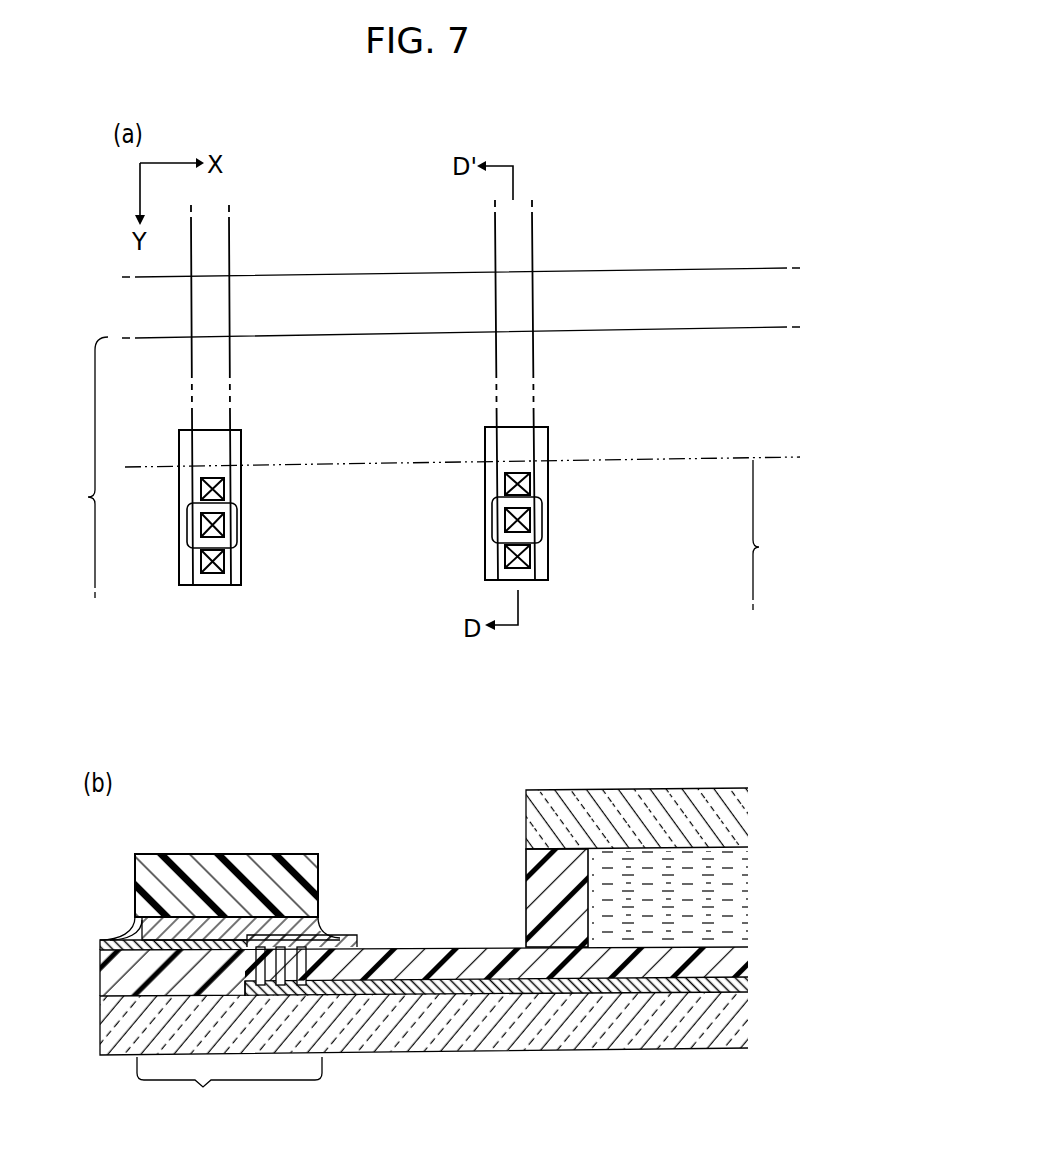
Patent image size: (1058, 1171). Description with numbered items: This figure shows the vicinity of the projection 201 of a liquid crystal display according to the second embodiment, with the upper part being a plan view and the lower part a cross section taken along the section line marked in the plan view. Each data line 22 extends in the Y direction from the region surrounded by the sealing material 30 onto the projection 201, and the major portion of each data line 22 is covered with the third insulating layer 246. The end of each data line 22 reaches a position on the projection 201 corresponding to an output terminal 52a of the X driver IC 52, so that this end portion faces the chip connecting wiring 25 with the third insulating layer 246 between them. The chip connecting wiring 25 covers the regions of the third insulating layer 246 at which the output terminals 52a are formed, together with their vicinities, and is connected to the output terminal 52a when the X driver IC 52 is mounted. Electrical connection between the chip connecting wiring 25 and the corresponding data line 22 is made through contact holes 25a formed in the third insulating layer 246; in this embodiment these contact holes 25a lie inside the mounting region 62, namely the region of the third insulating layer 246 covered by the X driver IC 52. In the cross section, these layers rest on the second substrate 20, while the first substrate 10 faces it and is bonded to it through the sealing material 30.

The first substrate 10 is at (526, 826).
The second substrate 20 is at (738, 1022).
The data line 22 is at (229, 246).
The chip connecting wiring 25 is at (242, 447).
The contact hole 25a is at (201, 560).
The sealing material 30 is at (695, 268).
The X driver IC 52 is at (676, 458).
The output terminal 52a is at (240, 527).
The mounting region 62 is at (471, 790).
The projection 201 is at (79, 467).
The third insulating layer 246 is at (685, 945).